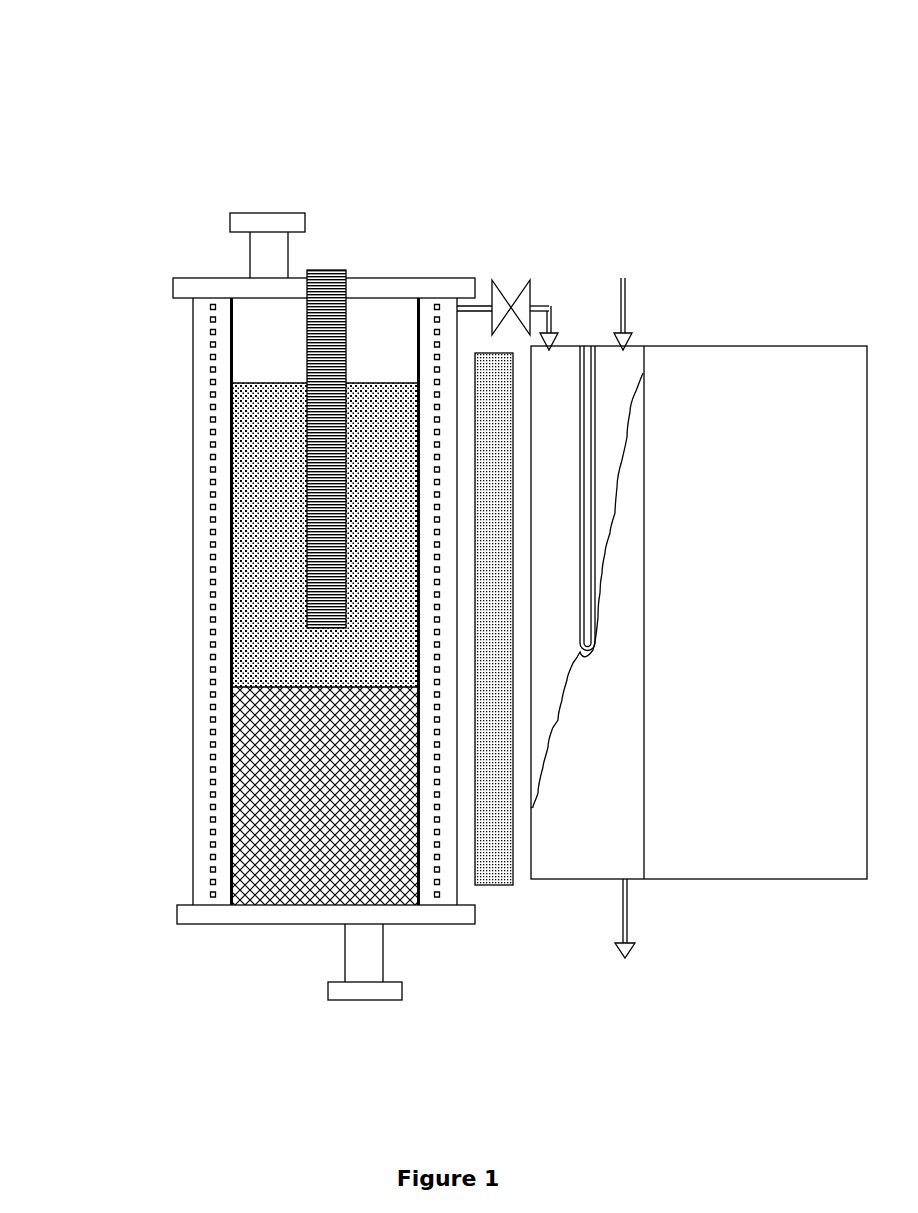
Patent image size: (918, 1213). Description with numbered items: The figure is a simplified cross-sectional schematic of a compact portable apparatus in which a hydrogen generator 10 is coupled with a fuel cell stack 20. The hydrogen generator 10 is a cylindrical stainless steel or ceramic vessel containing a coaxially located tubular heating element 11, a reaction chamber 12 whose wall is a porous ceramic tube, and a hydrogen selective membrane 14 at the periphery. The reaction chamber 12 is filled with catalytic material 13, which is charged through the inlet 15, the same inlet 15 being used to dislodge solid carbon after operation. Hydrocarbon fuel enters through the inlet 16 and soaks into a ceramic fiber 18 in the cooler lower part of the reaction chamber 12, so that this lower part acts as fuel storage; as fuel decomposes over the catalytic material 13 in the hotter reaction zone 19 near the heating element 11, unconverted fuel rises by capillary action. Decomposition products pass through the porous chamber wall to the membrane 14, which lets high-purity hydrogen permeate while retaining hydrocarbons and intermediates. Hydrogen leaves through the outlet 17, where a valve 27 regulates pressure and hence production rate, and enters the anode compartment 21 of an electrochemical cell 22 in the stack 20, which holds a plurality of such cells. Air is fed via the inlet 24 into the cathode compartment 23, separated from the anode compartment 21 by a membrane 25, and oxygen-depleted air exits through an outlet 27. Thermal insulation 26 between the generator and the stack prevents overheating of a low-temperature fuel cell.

The hydrogen generator 10 is at (193, 355).
The tubular heating element 11 is at (325, 572).
The reaction chamber 12 is at (230, 415).
The catalytic material 13 is at (288, 648).
The hydrogen selective membrane 14 is at (212, 677).
The inlet 15 is at (268, 260).
The inlet 16 is at (365, 942).
The outlet 17 is at (475, 303).
The ceramic fiber 18 is at (292, 733).
The reaction zone 19 is at (268, 495).
The fuel cell stack 20 is at (773, 352).
The anode compartment 21 is at (580, 346).
The electrochemical cell 22 is at (548, 440).
The cathode compartment 23 is at (604, 410).
The inlet 24 is at (594, 346).
The membrane 25 is at (590, 482).
The thermal insulation 26 is at (493, 887).
The valve 27 is at (491, 280).